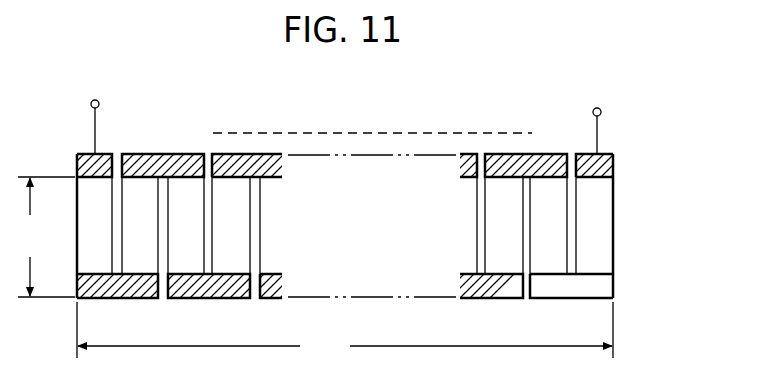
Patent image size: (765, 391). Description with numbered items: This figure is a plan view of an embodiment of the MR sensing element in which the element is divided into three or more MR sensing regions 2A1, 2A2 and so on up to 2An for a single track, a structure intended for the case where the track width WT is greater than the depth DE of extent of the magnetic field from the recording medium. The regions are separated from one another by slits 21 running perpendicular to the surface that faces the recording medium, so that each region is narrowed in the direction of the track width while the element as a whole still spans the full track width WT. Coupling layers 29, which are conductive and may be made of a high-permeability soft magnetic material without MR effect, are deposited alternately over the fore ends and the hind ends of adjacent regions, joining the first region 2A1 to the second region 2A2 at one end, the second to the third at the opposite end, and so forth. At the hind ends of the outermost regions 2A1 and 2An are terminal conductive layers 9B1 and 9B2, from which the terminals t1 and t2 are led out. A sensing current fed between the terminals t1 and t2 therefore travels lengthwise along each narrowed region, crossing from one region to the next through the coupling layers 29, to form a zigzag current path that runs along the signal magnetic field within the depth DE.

The coupling layer 29 is at (236, 154).
The slit 21 is at (115, 243).
The terminal conductive layer 9B1 is at (79, 172).
The terminal conductive layer 9B2 is at (610, 167).
The MR sensing region 2A1 is at (98, 192).
The MR sensing region 2A2 is at (143, 192).
The MR sensing region 2An is at (587, 198).
The terminal t1 is at (94, 116).
The terminal t2 is at (597, 118).
The depth of extent of the magnetic field DE is at (46, 237).
The track width WT is at (345, 331).